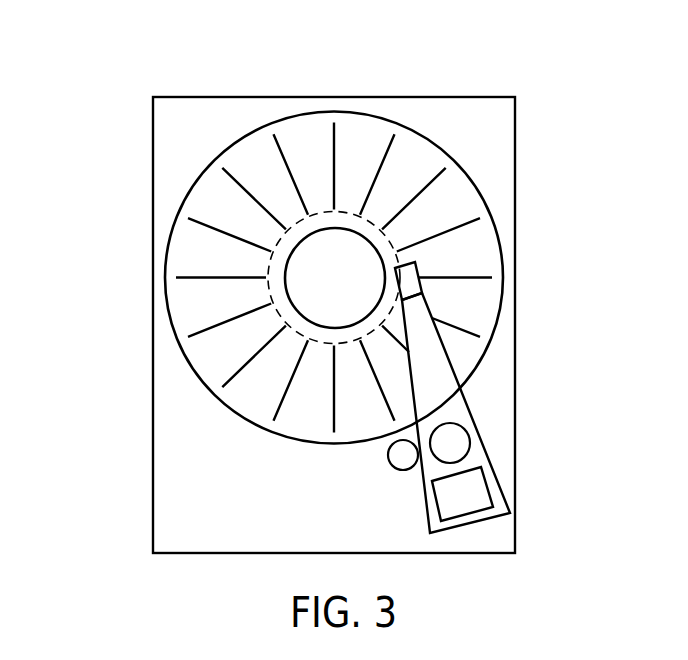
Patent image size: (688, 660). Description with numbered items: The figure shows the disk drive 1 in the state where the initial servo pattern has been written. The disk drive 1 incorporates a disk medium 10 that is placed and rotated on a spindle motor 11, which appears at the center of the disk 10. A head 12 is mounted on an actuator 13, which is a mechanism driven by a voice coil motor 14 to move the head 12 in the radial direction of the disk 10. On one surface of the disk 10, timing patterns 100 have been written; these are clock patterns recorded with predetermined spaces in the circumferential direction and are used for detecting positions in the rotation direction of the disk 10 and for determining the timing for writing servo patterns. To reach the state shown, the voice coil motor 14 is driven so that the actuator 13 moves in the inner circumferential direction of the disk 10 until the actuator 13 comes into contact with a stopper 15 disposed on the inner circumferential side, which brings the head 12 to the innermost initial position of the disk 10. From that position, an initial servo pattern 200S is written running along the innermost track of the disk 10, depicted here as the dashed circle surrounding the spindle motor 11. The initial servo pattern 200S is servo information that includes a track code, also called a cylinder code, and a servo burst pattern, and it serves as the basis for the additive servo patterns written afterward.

The disk drive 1 is at (337, 97).
The disk medium 10 is at (250, 425).
The spindle motor 11 is at (310, 313).
The head 12 is at (418, 266).
The actuator 13 is at (473, 418).
The voice coil motor 14 is at (495, 488).
The stopper 15 is at (397, 469).
The timing patterns 100 is at (193, 281).
The initial servo pattern 200S is at (273, 242).